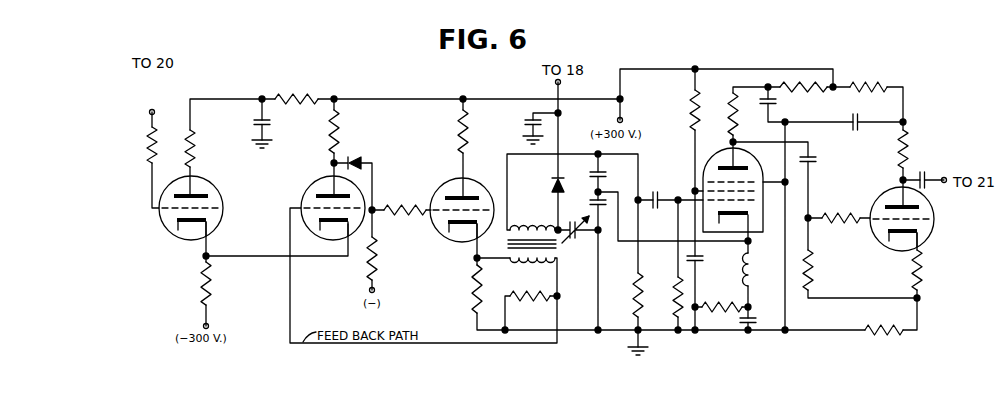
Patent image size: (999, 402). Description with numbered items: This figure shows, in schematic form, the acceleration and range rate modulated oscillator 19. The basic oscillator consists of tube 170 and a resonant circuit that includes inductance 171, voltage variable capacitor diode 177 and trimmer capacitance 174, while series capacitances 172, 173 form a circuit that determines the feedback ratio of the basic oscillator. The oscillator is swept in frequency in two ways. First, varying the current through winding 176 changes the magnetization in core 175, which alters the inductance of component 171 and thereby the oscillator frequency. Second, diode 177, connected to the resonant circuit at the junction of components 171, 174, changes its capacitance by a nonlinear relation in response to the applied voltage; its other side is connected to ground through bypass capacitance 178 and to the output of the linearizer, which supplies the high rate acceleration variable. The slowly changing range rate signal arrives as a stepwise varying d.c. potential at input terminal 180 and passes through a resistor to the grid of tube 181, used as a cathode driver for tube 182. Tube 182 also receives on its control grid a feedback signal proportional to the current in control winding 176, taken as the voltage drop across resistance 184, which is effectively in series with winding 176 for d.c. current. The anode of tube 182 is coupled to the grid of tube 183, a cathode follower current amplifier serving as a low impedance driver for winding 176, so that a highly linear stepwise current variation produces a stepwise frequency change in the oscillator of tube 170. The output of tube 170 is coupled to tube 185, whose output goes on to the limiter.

The acceleration and range rate modulated oscillator 19 is at (739, 274).
The tube 170 is at (748, 225).
The inductance 171 is at (548, 226).
The series capacitance 172 is at (604, 173).
The series capacitance 173 is at (591, 201).
The trimmer capacitance 174 is at (563, 243).
The core 175 is at (549, 247).
The winding 176 is at (530, 266).
The voltage variable capacitor diode 177 is at (553, 177).
The bypass capacitance 178 is at (523, 123).
The input terminal 180 is at (149, 112).
The tube 181 is at (165, 231).
The tube 182 is at (310, 186).
The tube 183 is at (438, 191).
The resistance 184 is at (542, 301).
The tube 185 is at (933, 232).